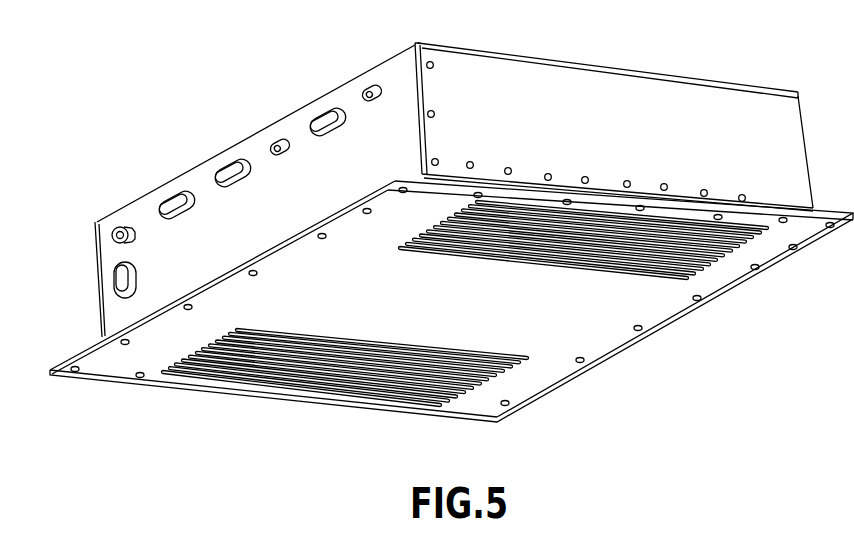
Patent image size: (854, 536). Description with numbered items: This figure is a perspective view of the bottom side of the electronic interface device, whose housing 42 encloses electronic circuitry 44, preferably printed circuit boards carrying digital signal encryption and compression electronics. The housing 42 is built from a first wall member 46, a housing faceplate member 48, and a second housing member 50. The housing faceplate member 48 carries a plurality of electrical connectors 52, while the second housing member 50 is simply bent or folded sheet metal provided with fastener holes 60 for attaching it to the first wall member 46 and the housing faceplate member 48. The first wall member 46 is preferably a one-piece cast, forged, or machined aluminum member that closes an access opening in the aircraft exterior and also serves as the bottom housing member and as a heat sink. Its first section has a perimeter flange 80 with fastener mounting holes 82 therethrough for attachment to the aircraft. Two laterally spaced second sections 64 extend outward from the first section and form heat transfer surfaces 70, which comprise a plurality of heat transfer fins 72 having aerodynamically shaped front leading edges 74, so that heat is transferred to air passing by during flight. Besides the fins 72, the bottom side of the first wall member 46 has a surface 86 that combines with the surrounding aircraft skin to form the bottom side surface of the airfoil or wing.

The housing 42 is at (578, 80).
The electronic circuitry 44 is at (614, 109).
The first wall member 46 is at (451, 307).
The housing faceplate member 48 is at (254, 188).
The second housing member 50 is at (673, 95).
The electrical connectors 52 is at (362, 90).
The fastener holes 60 is at (470, 162).
The second section 64 is at (420, 388).
The heat transfer surfaces 70 is at (483, 327).
The heat transfer fins 72 is at (222, 377).
The front leading edges 74 is at (168, 378).
The perimeter flange 80 is at (88, 349).
The fastener mounting holes 82 is at (77, 373).
The surface 86 is at (548, 318).